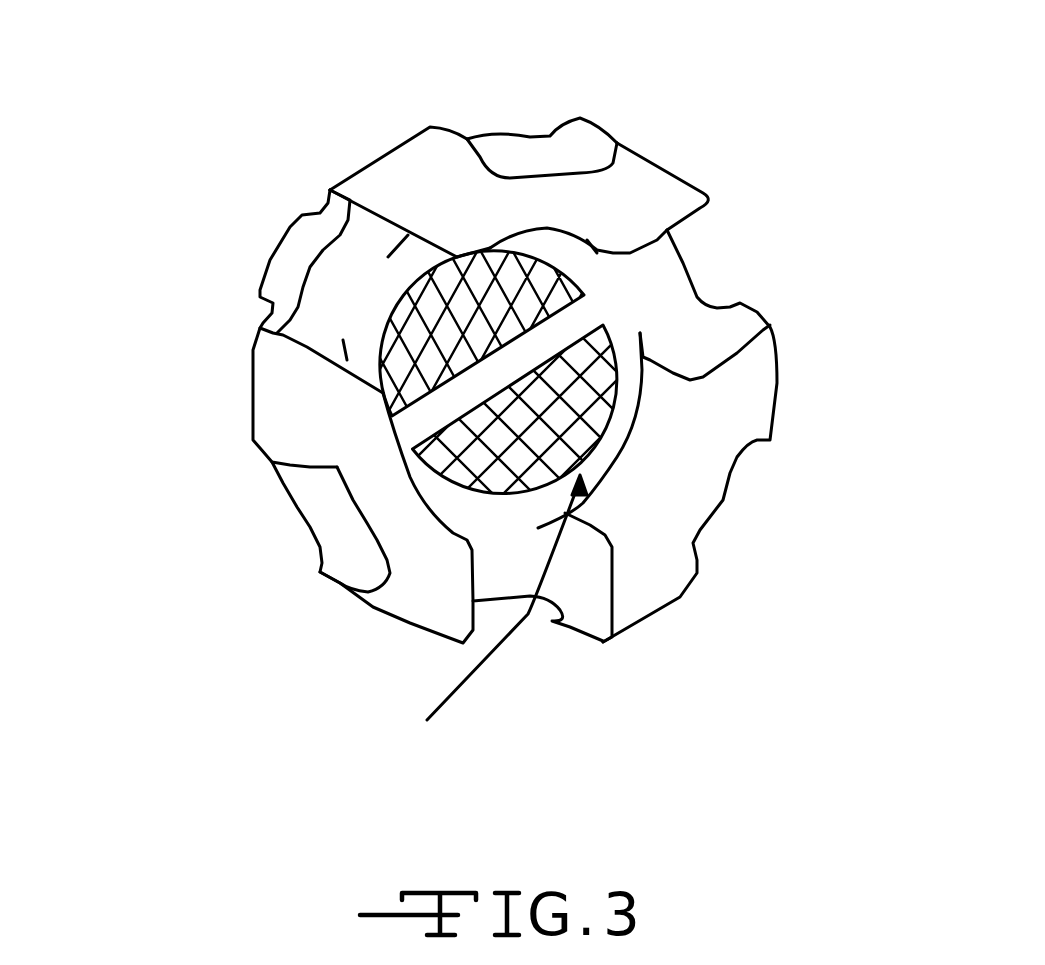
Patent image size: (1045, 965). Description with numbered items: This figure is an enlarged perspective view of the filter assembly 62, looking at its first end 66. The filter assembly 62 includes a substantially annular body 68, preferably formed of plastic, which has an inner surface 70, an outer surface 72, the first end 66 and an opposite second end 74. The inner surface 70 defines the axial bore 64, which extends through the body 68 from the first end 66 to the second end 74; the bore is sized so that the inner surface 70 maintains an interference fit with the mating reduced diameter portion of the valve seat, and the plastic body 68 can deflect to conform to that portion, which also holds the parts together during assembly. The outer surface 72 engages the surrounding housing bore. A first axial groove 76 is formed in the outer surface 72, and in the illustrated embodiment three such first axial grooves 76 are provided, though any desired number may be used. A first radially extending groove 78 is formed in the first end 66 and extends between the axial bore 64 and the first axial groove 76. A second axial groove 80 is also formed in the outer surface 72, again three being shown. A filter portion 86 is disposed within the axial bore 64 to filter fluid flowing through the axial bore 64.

The filter assembly 62 is at (377, 82).
The axial bore 64 is at (613, 433).
The first end 66 is at (768, 383).
The annular body 68 is at (672, 600).
The inner surface 70 is at (490, 632).
The outer surface 72 is at (410, 630).
The second end 74 is at (270, 260).
The first axial groove 76 is at (337, 213).
The first radially extending groove 78 is at (402, 226).
The second axial groove 80 is at (573, 132).
The filter portion 86 is at (410, 481).